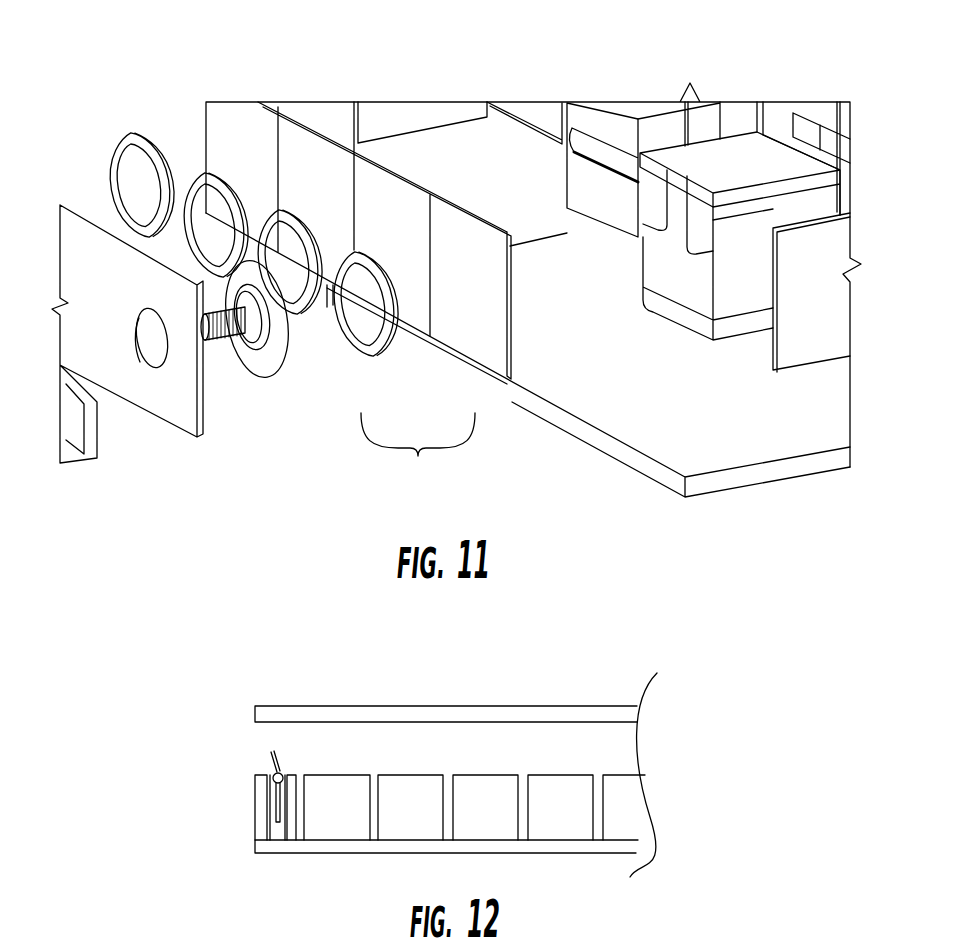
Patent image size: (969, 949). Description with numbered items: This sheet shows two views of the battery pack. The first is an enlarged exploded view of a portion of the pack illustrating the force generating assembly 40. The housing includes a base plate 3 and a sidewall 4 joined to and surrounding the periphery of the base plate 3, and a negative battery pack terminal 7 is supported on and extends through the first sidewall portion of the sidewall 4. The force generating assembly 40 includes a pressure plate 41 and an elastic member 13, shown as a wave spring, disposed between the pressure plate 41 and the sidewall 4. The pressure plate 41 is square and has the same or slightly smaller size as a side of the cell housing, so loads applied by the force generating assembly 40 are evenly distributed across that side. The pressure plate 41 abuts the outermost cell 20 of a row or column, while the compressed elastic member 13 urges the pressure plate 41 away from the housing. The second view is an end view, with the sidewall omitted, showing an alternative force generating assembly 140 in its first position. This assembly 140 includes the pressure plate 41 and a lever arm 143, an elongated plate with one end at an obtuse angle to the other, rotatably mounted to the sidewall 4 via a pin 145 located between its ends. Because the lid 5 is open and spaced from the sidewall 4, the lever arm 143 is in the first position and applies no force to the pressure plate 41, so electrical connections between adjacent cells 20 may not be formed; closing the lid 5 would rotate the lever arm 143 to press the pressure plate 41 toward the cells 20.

In FIG. 11, the base plate 3 is at (708, 452).
In FIG. 12, the base plate 3 is at (543, 848).
In FIG. 11, the sidewall 4 is at (167, 397).
In FIG. 12, the sidewall 4 is at (260, 808).
In FIG. 12, the lid 5 is at (447, 715).
In FIG. 11, the negative battery pack terminal 7 is at (247, 363).
In FIG. 11, the elastic member 13 is at (122, 142).
In FIG. 11, the cell 20 is at (543, 110).
In FIG. 12, the cell 20 is at (348, 818).
In FIG. 11, the force generating assembly 40 is at (418, 449).
In FIG. 11, the pressure plate 41 is at (397, 115).
In FIG. 12, the pressure plate 41 is at (292, 820).
In FIG. 12, the alternative force generating assembly 140 is at (293, 772).
In FIG. 12, the lever arm 143 is at (282, 768).
In FIG. 12, the pin 145 is at (284, 784).